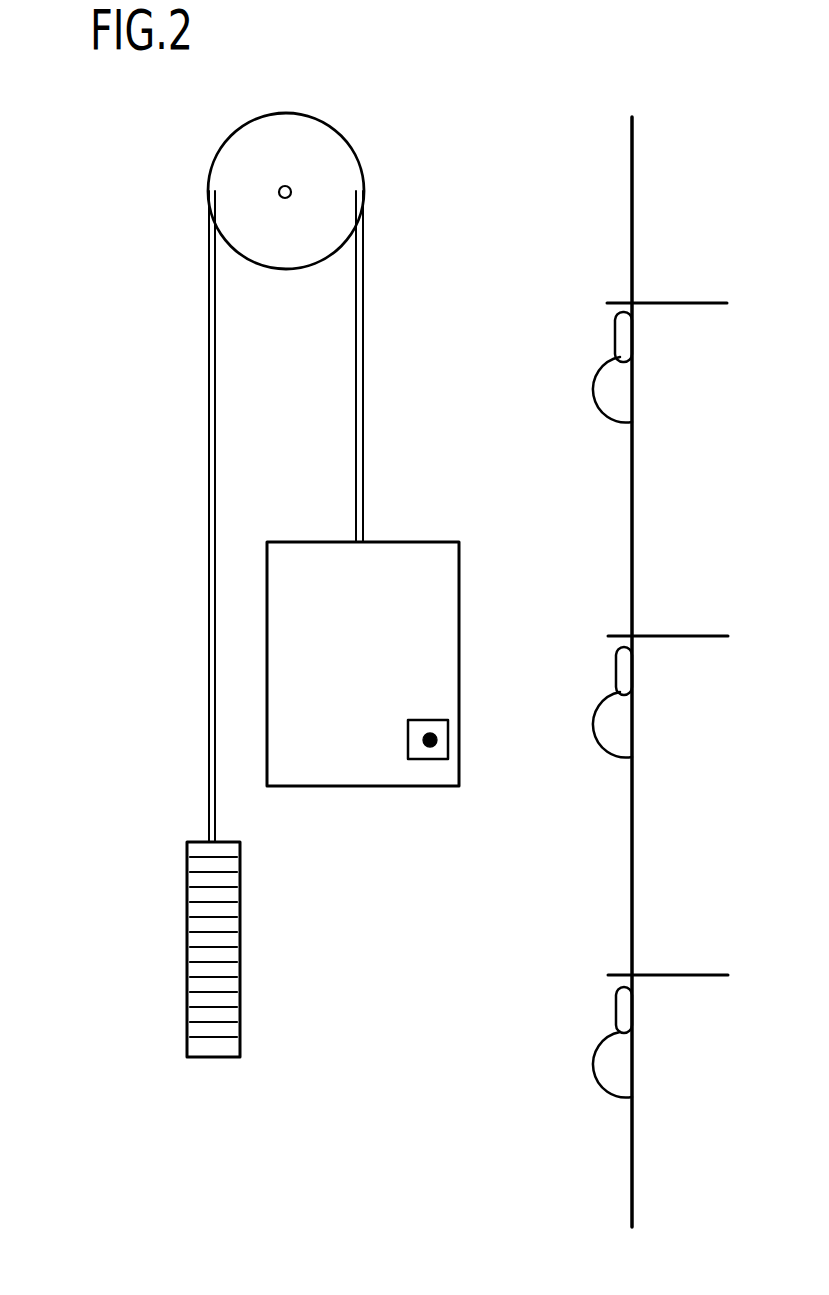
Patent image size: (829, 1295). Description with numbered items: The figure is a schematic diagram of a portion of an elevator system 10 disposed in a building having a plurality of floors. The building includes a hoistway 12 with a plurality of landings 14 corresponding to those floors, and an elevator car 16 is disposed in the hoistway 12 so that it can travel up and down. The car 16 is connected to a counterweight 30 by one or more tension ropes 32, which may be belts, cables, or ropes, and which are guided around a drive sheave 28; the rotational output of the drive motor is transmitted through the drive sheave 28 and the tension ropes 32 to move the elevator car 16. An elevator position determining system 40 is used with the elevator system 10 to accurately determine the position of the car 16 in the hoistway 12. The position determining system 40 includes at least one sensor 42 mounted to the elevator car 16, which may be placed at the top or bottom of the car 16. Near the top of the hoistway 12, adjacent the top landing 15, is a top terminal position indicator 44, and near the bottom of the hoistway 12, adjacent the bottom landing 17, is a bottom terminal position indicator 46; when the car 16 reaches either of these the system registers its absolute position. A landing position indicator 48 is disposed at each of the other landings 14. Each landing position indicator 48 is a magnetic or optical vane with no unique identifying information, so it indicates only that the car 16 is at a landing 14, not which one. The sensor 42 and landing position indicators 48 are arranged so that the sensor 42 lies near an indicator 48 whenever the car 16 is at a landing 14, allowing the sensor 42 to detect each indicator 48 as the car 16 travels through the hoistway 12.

The elevator system 10 is at (142, 240).
The hoistway 12 is at (556, 262).
The landings 14 is at (657, 625).
The top landing 15 is at (657, 292).
The elevator car 16 is at (393, 542).
The bottom landing 17 is at (657, 964).
The drive sheave 28 is at (305, 170).
The counterweight 30 is at (198, 842).
The tension ropes 32 is at (356, 320).
The elevator position determining system 40 is at (428, 720).
The sensor 42 is at (431, 746).
The top terminal position indicator 44 is at (632, 422).
The bottom terminal position indicator 46 is at (632, 1097).
The landing position indicator 48 is at (632, 757).